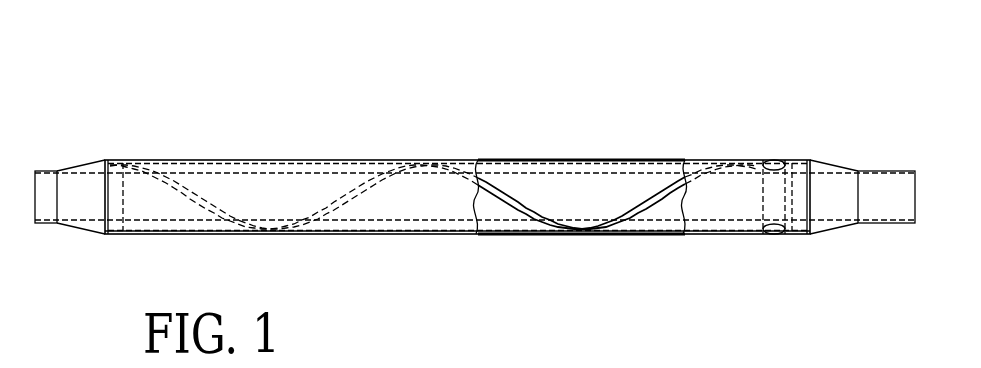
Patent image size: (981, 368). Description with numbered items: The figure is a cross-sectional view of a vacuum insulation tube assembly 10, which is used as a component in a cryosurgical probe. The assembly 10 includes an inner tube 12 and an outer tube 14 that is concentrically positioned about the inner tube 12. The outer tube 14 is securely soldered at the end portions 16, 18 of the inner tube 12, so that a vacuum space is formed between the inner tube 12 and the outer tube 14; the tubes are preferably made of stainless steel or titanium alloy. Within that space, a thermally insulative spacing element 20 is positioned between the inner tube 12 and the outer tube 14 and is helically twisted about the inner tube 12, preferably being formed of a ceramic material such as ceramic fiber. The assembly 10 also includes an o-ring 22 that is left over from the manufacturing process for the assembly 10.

The vacuum insulation tube assembly 10 is at (644, 111).
The inner tube 12 is at (233, 171).
The outer tube 14 is at (333, 161).
The end portion 16 is at (828, 159).
The end portion 18 is at (82, 164).
The thermally insulative spacing element 20 is at (355, 198).
The o-ring 22 is at (773, 207).